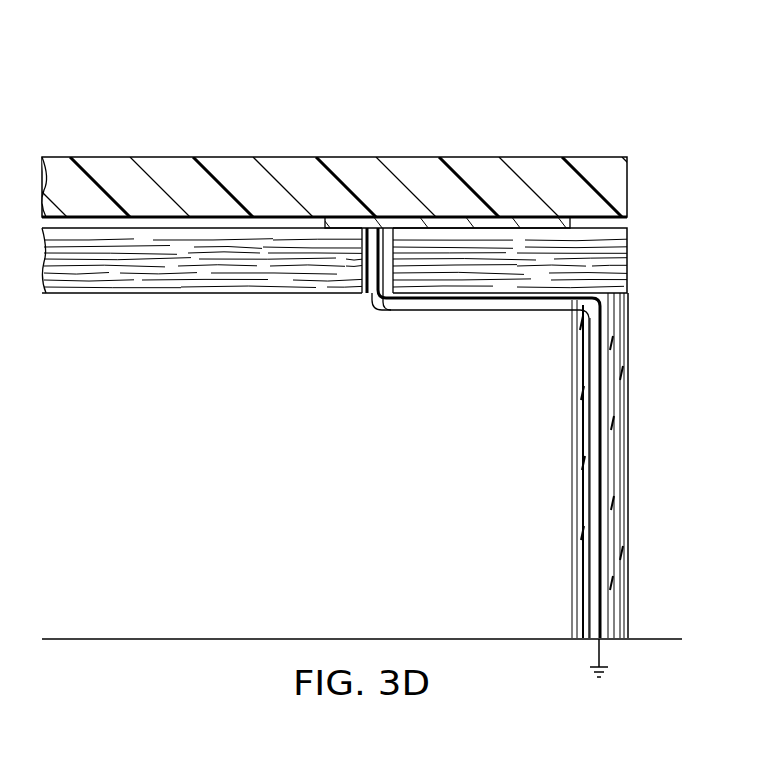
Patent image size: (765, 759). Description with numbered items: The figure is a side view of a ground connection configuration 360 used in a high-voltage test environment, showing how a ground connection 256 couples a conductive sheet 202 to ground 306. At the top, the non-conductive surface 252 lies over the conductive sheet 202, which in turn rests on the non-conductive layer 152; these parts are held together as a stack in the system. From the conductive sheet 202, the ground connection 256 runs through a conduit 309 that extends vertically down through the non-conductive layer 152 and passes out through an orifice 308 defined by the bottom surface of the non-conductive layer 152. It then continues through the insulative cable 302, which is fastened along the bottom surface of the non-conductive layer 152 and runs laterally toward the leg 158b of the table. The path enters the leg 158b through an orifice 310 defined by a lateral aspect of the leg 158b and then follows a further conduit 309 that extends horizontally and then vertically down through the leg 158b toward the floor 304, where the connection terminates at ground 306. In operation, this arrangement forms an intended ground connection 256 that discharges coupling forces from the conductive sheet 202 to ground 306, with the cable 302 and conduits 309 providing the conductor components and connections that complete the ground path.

The ground connection configuration 360 is at (496, 94).
The non-conductive surface 252 is at (533, 157).
The conductive sheet 202 is at (401, 219).
The non-conductive layer 152 is at (636, 238).
The leg 158b is at (627, 538).
The conduit 309 is at (356, 274).
The insulative cable 302 is at (410, 312).
The ground connection 256 is at (485, 306).
The orifice 308 is at (358, 303).
The orifice 310 is at (560, 319).
The floor 304 is at (272, 637).
The ground 306 is at (606, 675).